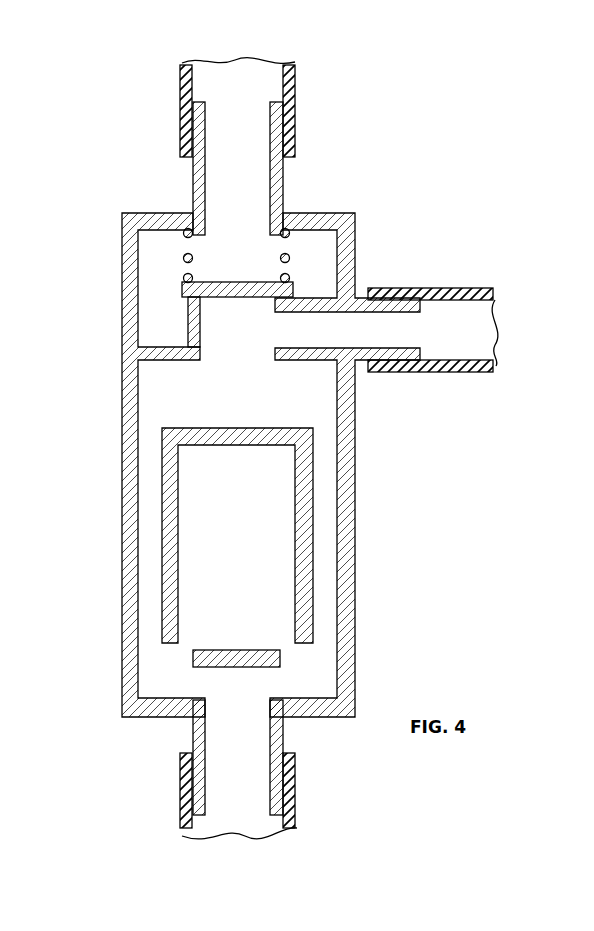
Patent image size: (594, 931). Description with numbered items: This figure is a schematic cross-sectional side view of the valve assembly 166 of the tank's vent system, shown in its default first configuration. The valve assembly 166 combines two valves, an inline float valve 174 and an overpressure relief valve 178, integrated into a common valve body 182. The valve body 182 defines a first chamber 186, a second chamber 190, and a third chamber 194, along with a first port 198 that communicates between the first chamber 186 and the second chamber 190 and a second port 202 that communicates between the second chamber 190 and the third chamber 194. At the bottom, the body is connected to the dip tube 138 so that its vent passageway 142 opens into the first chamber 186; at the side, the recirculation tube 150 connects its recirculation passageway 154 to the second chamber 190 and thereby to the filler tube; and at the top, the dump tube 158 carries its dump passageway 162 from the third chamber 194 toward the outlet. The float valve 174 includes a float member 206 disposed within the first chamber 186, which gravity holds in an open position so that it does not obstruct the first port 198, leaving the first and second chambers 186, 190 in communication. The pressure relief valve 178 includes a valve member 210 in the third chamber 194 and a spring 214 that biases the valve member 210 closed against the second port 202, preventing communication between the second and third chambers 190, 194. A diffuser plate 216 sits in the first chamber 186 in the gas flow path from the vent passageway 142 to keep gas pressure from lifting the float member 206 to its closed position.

The dip tube 138 is at (297, 816).
The vent passageway 142 is at (192, 827).
The recirculation tube 150 is at (441, 290).
The recirculation passageway 154 is at (463, 350).
The dump tube 158 is at (296, 78).
The dump passageway 162 is at (206, 84).
The valve assembly 166 is at (405, 152).
The inline float valve 174 is at (180, 398).
The overpressure relief valve 178 is at (172, 252).
The valve body 182 is at (356, 616).
The first chamber 186 is at (309, 401).
The second chamber 190 is at (253, 334).
The third chamber 194 is at (253, 262).
The first port 198 is at (275, 349).
The second port 202 is at (182, 288).
The float member 206 is at (313, 522).
The valve member 210 is at (294, 290).
The spring 214 is at (290, 235).
The diffuser plate 216 is at (282, 654).